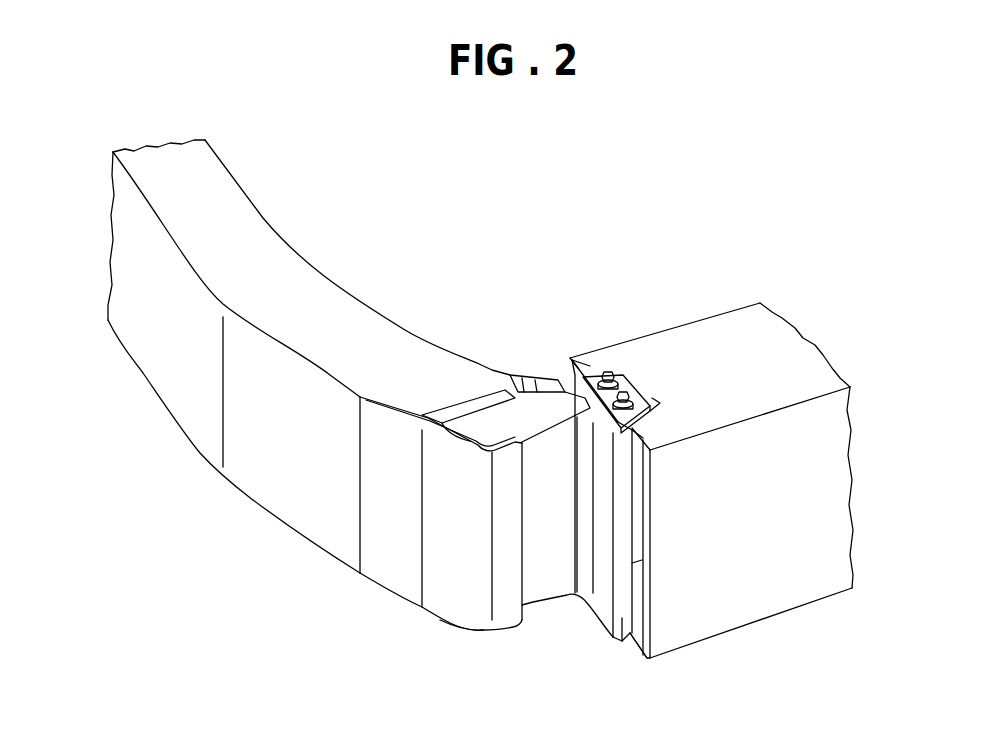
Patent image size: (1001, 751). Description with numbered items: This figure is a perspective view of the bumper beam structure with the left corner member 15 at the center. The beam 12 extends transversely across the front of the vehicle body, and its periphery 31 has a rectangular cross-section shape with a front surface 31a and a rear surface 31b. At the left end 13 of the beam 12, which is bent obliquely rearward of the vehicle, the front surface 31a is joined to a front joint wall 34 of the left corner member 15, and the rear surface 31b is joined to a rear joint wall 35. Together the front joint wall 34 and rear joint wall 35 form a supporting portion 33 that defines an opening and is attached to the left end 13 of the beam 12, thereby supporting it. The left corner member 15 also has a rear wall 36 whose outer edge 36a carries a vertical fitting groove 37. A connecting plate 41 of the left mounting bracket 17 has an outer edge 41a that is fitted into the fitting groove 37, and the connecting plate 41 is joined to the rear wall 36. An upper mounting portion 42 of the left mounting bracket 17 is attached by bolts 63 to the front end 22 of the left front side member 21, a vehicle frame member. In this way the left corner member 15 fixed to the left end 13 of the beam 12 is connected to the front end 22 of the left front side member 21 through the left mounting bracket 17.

The beam 12 is at (258, 366).
The left end 13 is at (250, 503).
The left corner member 15 is at (462, 630).
The left mounting bracket 17 is at (629, 393).
The left front side member 21 is at (823, 582).
The front end 22 is at (675, 630).
The periphery 31 is at (288, 366).
The front surface 31a is at (257, 425).
The rear surface 31b is at (357, 298).
The supporting portion 33 is at (441, 488).
The front joint wall 34 is at (390, 555).
The rear joint wall 35 is at (493, 363).
The rear wall 36 is at (576, 574).
The outer edge 36a is at (622, 620).
The fitting groove 37 is at (652, 398).
The connecting plate 41 is at (698, 444).
The outer edge 41a is at (640, 393).
The upper mounting portion 42 is at (585, 415).
The bolts 63 is at (610, 374).